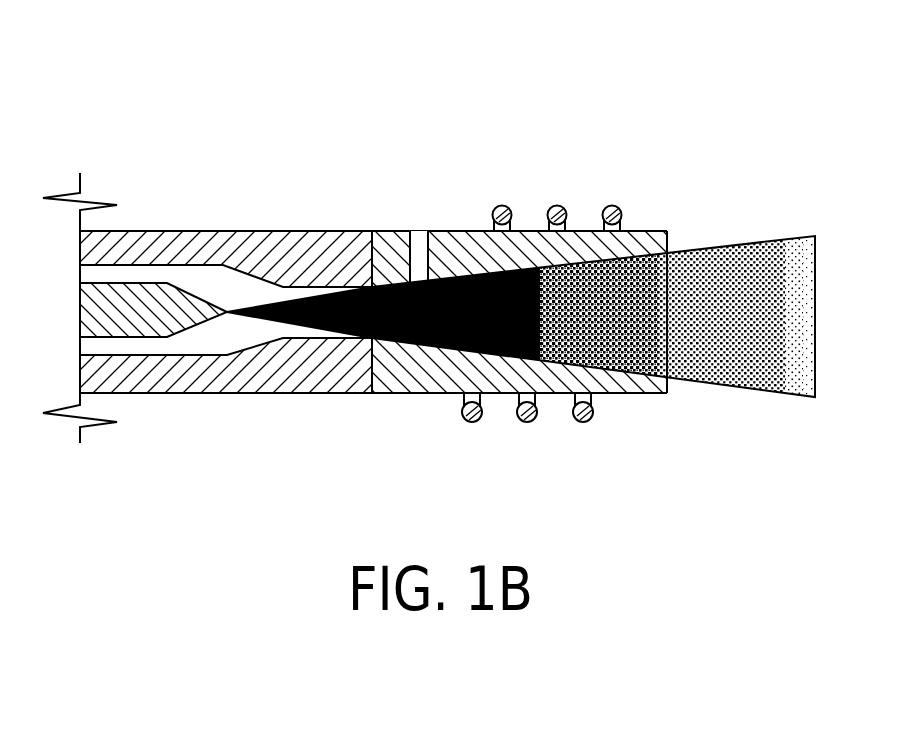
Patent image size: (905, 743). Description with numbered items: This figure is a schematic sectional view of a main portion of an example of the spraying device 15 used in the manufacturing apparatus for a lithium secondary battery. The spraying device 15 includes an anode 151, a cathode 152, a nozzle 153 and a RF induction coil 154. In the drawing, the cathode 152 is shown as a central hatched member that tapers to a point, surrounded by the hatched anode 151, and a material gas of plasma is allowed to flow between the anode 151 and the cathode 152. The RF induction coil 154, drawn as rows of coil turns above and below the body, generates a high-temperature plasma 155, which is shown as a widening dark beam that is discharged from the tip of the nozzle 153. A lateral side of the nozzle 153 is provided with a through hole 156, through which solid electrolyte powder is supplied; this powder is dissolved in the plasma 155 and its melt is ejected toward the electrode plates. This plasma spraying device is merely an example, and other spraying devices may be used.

The spraying device 15 is at (95, 98).
The anode 151 is at (243, 230).
The cathode 152 is at (157, 330).
The nozzle 153 is at (390, 393).
The RF induction coil 154 is at (623, 203).
The plasma 155 is at (763, 240).
The through hole 156 is at (420, 235).